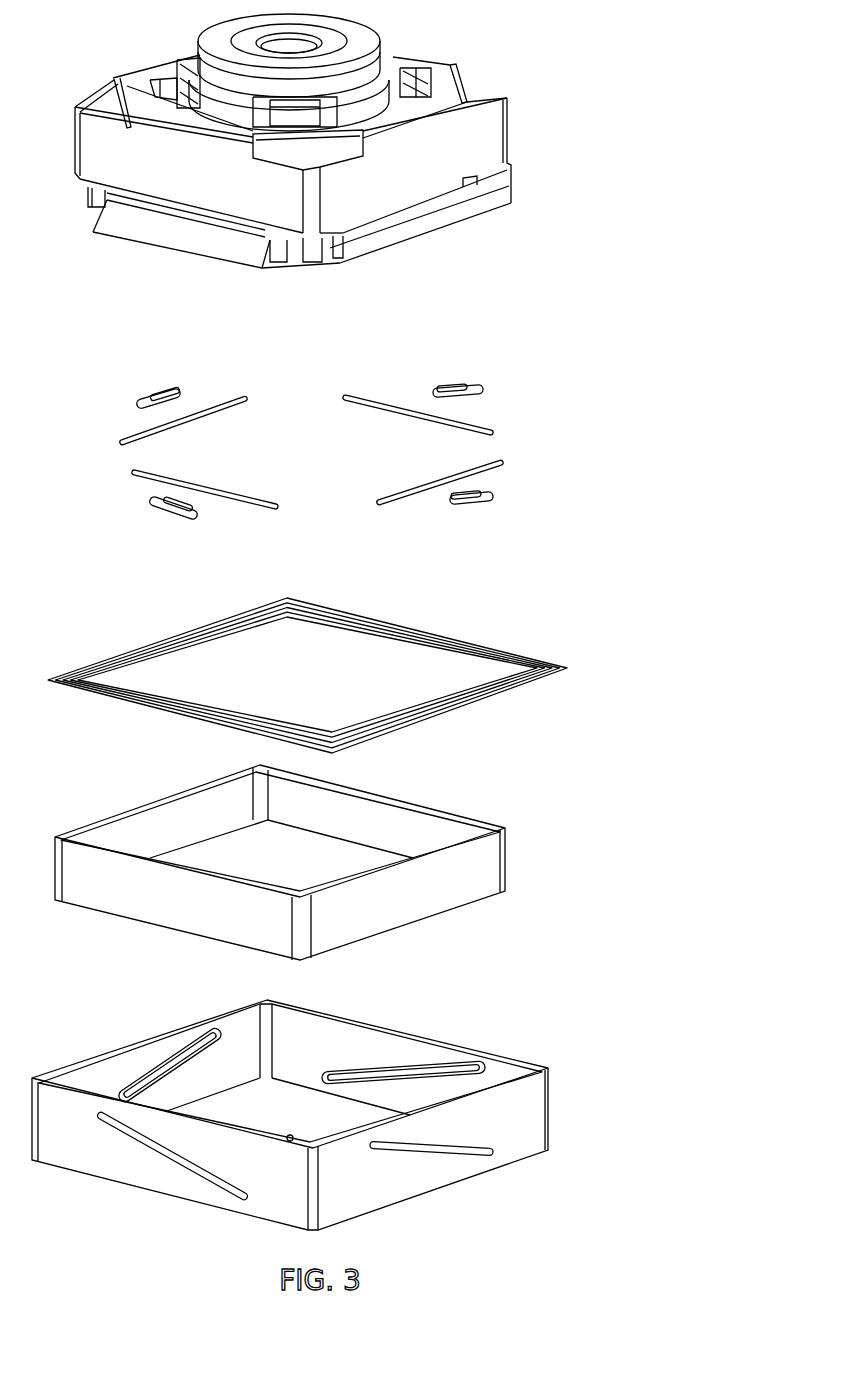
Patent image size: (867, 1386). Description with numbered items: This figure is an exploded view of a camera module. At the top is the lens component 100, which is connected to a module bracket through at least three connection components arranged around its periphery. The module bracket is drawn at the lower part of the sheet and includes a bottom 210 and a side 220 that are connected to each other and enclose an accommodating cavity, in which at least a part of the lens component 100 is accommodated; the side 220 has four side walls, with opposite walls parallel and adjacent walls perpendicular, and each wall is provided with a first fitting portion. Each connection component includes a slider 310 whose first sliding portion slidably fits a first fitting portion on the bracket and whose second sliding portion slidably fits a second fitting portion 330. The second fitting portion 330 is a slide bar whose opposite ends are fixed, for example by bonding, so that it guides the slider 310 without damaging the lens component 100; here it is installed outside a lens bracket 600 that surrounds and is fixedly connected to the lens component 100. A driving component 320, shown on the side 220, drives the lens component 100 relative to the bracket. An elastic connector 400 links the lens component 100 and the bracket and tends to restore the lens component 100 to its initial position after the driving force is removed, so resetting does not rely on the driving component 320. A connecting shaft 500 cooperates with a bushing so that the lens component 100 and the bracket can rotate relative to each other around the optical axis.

The lens component 100 is at (455, 127).
The bottom 210 is at (267, 1083).
The side 220 is at (510, 1087).
The slider 310 is at (177, 373).
The driving component 320 is at (413, 1050).
The second fitting portion 330 is at (223, 390).
The elastic connector 400 is at (212, 615).
The connecting shaft 500 is at (303, 1107).
The lens bracket 600 is at (412, 803).